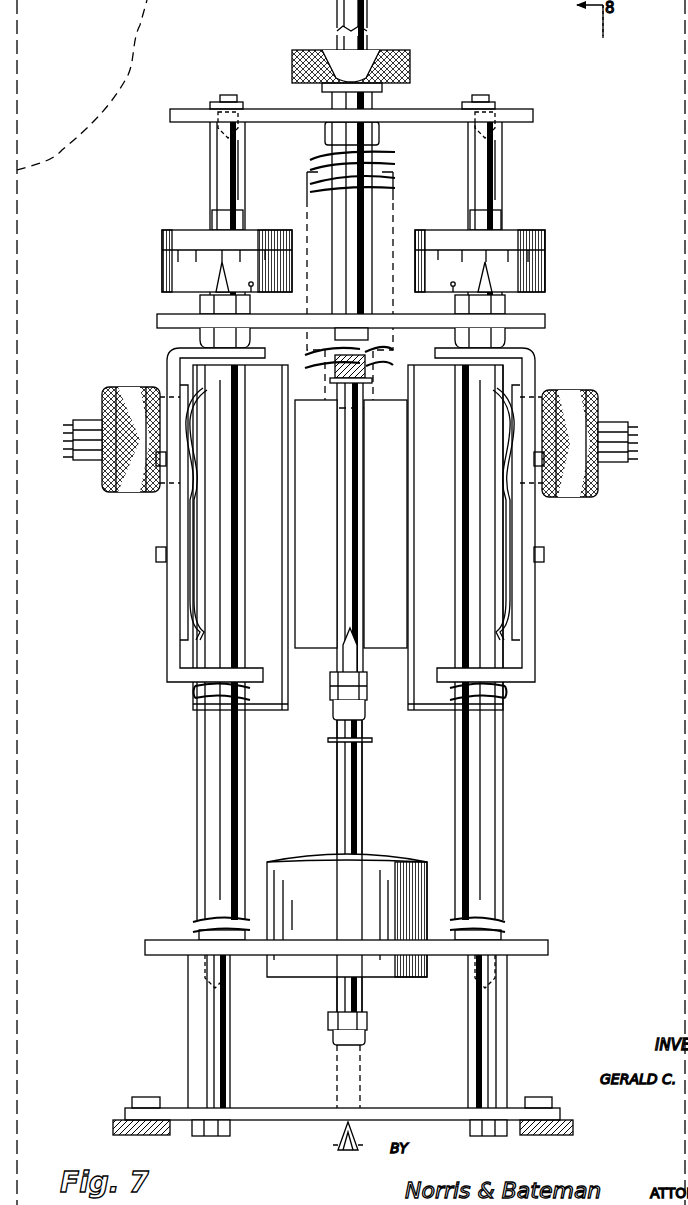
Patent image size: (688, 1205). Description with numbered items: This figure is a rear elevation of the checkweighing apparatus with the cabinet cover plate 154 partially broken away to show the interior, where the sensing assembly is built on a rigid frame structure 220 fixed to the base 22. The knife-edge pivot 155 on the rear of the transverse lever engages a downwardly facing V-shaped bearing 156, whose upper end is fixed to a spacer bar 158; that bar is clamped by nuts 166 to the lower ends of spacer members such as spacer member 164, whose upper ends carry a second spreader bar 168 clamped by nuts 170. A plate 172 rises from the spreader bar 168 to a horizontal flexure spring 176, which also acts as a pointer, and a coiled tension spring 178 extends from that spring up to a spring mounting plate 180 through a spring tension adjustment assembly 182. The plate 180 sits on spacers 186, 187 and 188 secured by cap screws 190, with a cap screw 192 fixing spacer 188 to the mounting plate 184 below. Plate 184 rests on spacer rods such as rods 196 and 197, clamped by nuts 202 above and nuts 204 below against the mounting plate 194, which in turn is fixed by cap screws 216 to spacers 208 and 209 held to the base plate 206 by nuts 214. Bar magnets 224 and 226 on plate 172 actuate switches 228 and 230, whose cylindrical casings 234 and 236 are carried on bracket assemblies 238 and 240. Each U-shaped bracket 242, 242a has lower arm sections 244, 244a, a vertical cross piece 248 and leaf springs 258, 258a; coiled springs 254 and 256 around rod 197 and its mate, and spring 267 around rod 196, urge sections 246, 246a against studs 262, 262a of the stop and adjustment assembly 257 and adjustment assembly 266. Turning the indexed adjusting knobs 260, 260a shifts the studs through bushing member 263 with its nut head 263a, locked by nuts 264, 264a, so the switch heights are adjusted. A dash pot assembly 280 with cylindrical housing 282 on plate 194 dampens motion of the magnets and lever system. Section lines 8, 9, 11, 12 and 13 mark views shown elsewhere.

The cover plate 154 is at (134, 32).
The spring tension adjustment assembly 182 is at (384, 95).
The spring mounting plate 180 is at (534, 117).
The cap screws 190 is at (226, 95).
The spacer 186 is at (210, 142).
The spacer 187 is at (502, 150).
The coiled tension spring 178 is at (385, 163).
The spacer 188 is at (378, 210).
The section line 13 is at (250, 193).
The stud 262 is at (218, 219).
The stud 262a is at (492, 220).
The indexed adjusting knob 260 is at (162, 268).
The indexed adjusting knob 260a is at (545, 266).
The bushing member 263 is at (251, 301).
The nut head 263a is at (455, 301).
The stop and adjustment assembly 257 is at (161, 243).
The adjustment assembly 266 is at (549, 249).
The nuts 202 is at (200, 300).
The mounting plate 184 is at (545, 321).
The nut 264 is at (200, 341).
The nut 264a is at (505, 340).
The cap screw 192 is at (335, 334).
The horizontal flexure spring 176 is at (367, 383).
The bar magnet 224 is at (301, 578).
The bar magnet 226 is at (400, 560).
The cylindrical casing 234 is at (282, 626).
The cylindrical casing 236 is at (448, 626).
The spacer rod 197 is at (196, 720).
The spacer rod 196 is at (505, 732).
The section of bracket 246 is at (240, 366).
The section of bracket 246a is at (454, 367).
The lower horizontal arm section 244 is at (273, 657).
The lower horizontal arm section 244a is at (443, 670).
The coiled spring 256 is at (518, 680).
The vertical cross piece 248 is at (168, 517).
The bracket assembly 240 is at (545, 530).
The leaf spring 258 is at (205, 400).
The leaf spring 258a is at (492, 400).
The U-shaped bracket 242 is at (160, 612).
The U-shaped bracket 242a is at (538, 582).
The bracket assembly 238 is at (158, 583).
The plate 172 is at (338, 646).
The spreader bar 168 is at (332, 690).
The nuts 170 is at (365, 677).
The spacer member 164 is at (362, 778).
The coiled spring 254 is at (197, 690).
The spring 267 is at (505, 695).
The cap screws 216 is at (200, 930).
The switch 228 is at (268, 716).
The switch 230 is at (443, 716).
The dash pot assembly 280 is at (298, 851).
The cylindrical housing 282 is at (390, 866).
The mounting plate 194 is at (541, 942).
The frame structure 220 is at (178, 962).
The nuts 204 is at (228, 965).
The spacer 208 is at (190, 1038).
The spacer 209 is at (507, 1027).
The spacer bar 158 is at (330, 1022).
The nuts 166 is at (362, 1038).
The base plate 206 is at (396, 1111).
The base 22 is at (142, 1136).
The nut 214 is at (190, 1130).
The V-shaped bearing 156 is at (336, 1131).
The knife-edge pivot 155 is at (332, 1145).
The section line 12 is at (105, 378).
The section line 9 is at (160, 757).
The section line 11 is at (150, 1003).
The section line 8 is at (593, 1127).